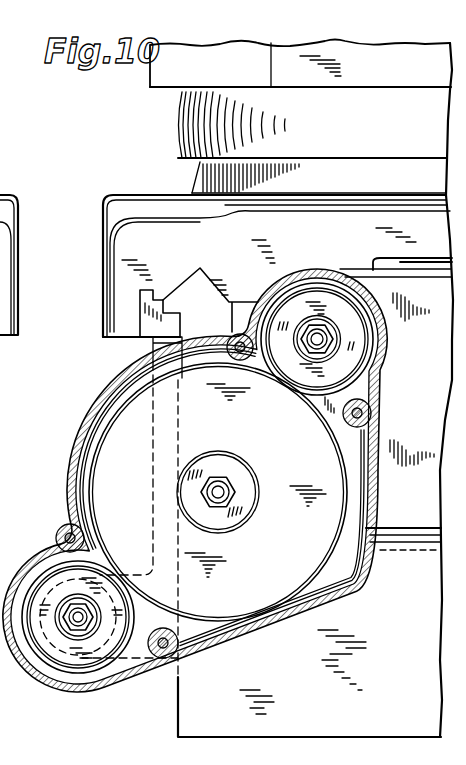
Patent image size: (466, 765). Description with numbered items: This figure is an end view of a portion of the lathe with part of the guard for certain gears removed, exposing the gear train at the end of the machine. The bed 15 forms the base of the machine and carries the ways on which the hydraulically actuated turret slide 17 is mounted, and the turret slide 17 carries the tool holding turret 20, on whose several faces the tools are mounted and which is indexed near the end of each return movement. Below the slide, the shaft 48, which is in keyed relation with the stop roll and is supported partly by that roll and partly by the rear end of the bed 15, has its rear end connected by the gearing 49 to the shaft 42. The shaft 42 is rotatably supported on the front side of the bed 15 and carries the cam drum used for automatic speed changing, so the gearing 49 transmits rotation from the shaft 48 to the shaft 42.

The tool holding turret 20 is at (375, 50).
The turret slide 17 is at (147, 206).
The shaft 48 is at (320, 340).
The gearing 49 is at (313, 573).
The shaft 42 is at (76, 621).
The bed 15 is at (192, 712).